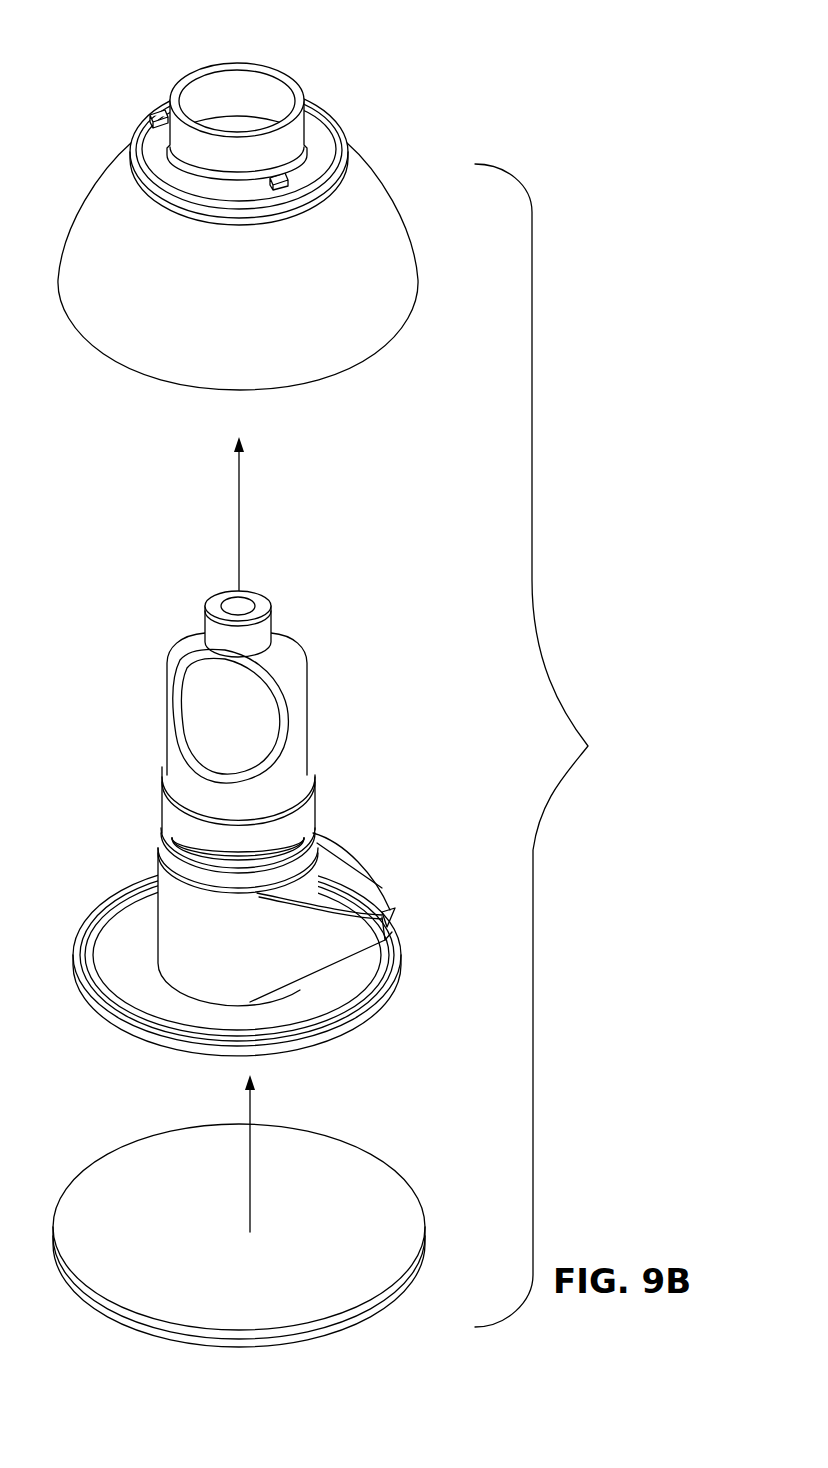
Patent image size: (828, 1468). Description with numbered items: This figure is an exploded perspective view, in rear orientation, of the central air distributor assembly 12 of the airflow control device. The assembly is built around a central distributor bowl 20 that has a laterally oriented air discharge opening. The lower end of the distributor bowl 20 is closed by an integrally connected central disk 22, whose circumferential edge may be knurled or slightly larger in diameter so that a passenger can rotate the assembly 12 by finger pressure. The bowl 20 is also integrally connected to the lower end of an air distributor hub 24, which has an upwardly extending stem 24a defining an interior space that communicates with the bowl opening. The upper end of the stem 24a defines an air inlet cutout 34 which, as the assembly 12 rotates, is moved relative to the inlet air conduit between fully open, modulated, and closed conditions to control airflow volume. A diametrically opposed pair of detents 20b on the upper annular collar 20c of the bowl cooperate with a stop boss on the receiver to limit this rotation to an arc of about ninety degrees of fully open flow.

The central air distributor assembly 12 is at (552, 690).
The central distributor bowl 20 is at (243, 213).
The detents 20b is at (162, 111).
The upper annular collar 20c is at (313, 93).
The central disk 22 is at (154, 1247).
The air distributor hub 24 is at (236, 823).
The stem 24a is at (213, 687).
The air inlet cutout 34 is at (178, 741).